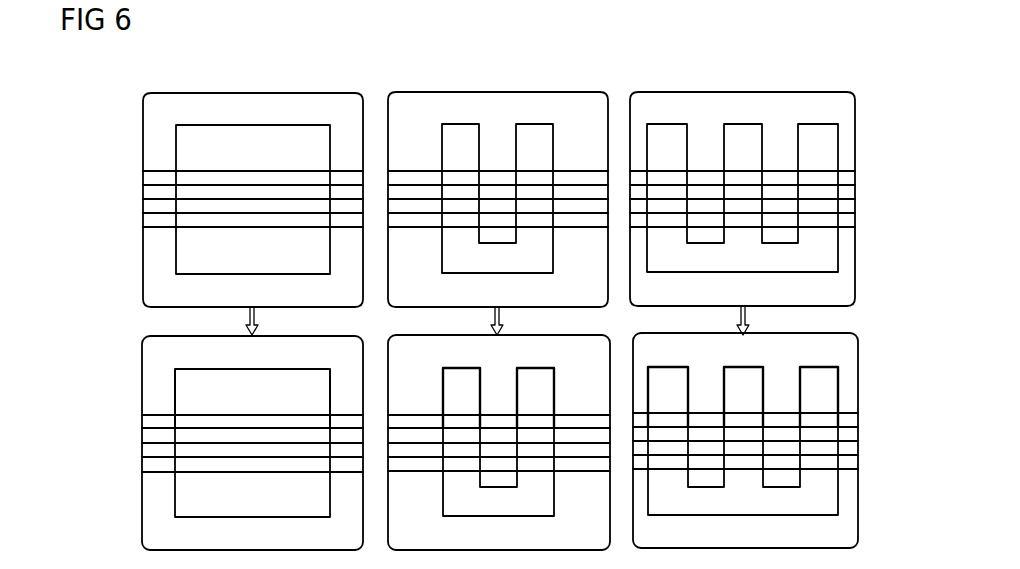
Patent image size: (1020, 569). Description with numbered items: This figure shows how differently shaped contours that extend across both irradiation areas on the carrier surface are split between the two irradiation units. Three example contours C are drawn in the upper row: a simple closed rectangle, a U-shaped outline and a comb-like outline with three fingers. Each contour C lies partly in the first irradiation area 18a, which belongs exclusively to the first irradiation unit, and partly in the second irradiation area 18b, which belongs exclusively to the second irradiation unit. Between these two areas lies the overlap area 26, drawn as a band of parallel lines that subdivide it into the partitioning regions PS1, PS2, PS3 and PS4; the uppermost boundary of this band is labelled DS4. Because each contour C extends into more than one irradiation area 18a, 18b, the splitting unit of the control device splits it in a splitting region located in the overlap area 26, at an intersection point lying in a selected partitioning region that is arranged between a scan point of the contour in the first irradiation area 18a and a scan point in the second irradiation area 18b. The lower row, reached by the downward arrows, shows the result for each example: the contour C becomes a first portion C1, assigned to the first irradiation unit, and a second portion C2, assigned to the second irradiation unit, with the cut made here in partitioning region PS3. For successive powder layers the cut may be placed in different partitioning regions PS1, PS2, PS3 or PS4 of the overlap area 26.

The first irradiation area 18a is at (146, 106).
The second irradiation area 18b is at (147, 291).
The overlap area 26 is at (147, 179).
The fourth dielectric layer DS4 is at (346, 170).
The partitioning region PS4 is at (148, 178).
The partitioning region PS3 is at (148, 193).
The partitioning region PS2 is at (148, 207).
The partitioning region PS1 is at (148, 221).
The contour C is at (252, 125).
The first portion C1 is at (258, 369).
The second portion C2 is at (250, 517).